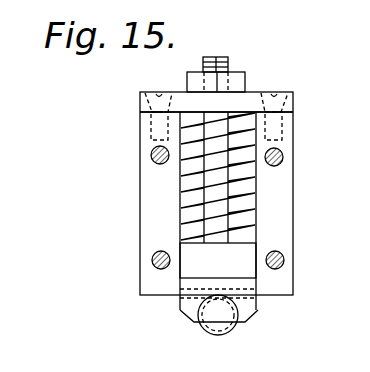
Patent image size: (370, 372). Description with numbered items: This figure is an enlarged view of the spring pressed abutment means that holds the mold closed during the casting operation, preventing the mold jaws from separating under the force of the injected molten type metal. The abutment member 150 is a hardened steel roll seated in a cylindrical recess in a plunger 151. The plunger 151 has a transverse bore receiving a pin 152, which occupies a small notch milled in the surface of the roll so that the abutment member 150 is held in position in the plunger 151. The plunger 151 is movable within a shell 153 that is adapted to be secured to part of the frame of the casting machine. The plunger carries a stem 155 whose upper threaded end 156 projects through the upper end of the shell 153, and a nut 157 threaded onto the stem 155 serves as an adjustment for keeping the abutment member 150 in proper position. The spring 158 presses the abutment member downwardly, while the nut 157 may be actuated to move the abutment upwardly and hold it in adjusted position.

The abutment member 150 is at (245, 327).
The plunger 151 is at (240, 255).
The pin 152 is at (247, 295).
The shell 153 is at (286, 185).
The stem 155 is at (233, 112).
The upper threaded end 156 is at (215, 58).
The nut 157 is at (235, 77).
The spring 158 is at (245, 152).